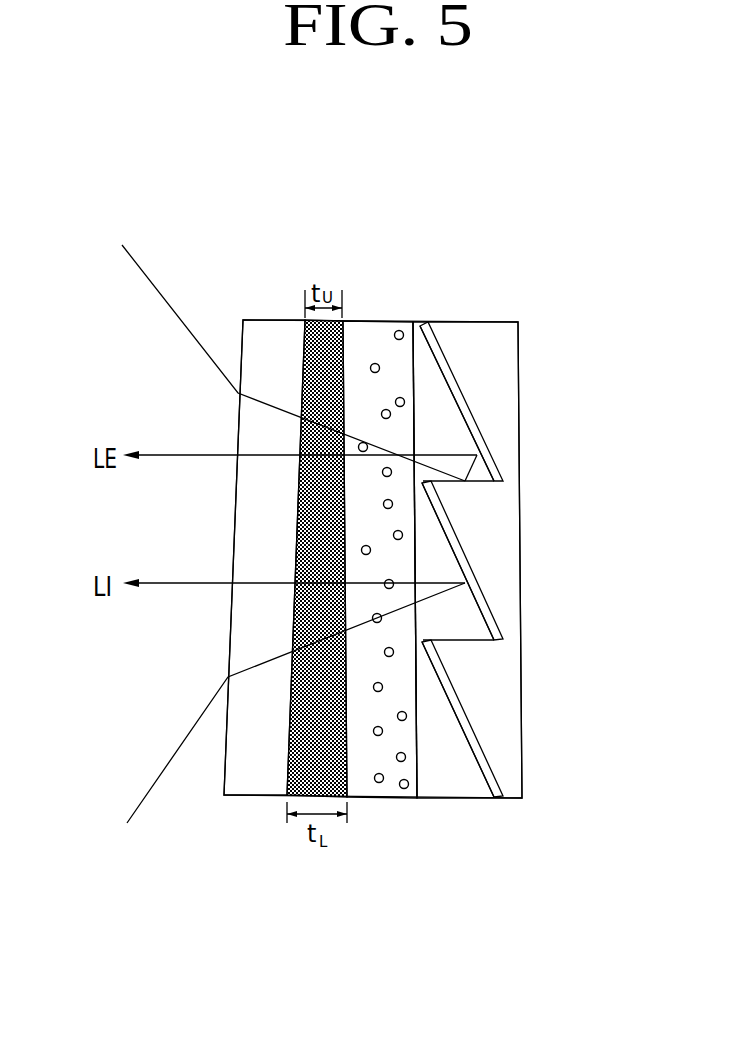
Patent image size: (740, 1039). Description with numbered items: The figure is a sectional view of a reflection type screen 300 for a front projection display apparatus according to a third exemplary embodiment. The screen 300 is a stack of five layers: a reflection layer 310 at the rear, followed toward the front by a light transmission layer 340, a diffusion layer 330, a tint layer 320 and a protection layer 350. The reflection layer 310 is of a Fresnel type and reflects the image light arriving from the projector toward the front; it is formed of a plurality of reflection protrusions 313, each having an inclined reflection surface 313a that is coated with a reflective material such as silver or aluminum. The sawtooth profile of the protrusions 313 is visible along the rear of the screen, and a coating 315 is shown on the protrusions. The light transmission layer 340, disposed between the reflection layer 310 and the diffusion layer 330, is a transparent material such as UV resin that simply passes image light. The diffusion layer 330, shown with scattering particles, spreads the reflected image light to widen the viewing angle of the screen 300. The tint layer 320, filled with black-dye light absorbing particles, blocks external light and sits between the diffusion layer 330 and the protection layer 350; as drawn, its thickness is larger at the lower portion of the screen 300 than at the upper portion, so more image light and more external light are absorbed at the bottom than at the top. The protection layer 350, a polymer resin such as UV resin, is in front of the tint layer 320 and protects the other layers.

The reflection type screen 300 is at (408, 142).
The reflection layer 310 is at (472, 305).
The reflection protrusions 313 is at (475, 519).
The inclined reflection surface 313a is at (464, 557).
The reflective layer 315 is at (487, 608).
The tint layer 320 is at (340, 324).
The diffusion layer 330 is at (381, 305).
The light transmission layer 340 is at (425, 357).
The protection layer 350 is at (263, 300).